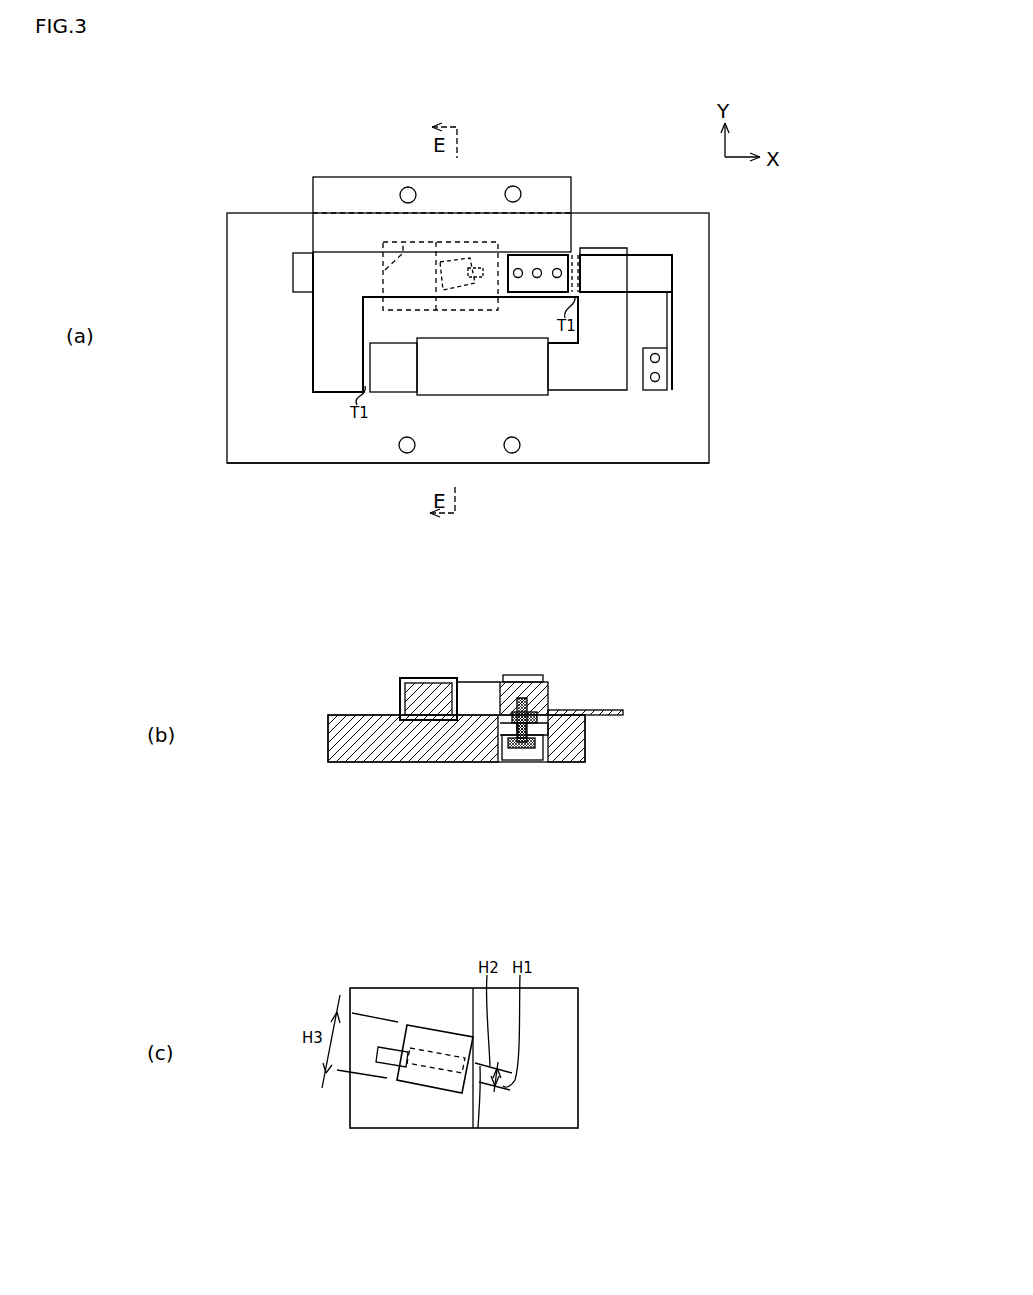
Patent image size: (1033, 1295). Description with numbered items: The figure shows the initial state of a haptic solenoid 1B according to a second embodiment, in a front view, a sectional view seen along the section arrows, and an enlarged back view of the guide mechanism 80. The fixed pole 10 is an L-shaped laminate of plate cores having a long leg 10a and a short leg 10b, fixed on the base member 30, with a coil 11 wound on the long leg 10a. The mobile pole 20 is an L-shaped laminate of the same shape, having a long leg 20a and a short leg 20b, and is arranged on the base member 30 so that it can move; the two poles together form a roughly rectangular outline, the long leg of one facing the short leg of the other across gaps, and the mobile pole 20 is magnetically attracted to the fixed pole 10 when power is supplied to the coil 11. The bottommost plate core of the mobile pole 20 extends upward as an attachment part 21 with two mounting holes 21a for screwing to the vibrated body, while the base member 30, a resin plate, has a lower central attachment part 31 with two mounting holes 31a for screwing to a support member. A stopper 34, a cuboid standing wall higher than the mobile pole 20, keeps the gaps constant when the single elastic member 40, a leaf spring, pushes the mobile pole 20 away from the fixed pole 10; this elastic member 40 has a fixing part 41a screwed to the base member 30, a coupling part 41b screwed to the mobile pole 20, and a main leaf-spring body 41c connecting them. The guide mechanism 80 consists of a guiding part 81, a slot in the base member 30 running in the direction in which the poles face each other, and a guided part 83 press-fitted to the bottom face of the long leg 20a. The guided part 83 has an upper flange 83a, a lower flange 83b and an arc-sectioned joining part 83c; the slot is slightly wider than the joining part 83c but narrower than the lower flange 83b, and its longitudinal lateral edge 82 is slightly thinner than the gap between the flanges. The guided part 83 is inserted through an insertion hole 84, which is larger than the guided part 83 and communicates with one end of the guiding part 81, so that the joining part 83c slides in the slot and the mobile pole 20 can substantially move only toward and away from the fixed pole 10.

The haptic solenoid 1B is at (616, 177).
The fixed pole 10 is at (597, 396).
The long leg 10a is at (387, 371).
The short leg 10b is at (602, 318).
The coil 11 is at (504, 380).
The mobile pole 20 is at (303, 313).
The long leg 20a is at (503, 253).
The short leg 20b is at (335, 366).
The attachment part 21 is at (428, 187).
The mounting holes 21a is at (404, 187).
The base member 30 is at (714, 440).
The attachment part 31 is at (463, 444).
The mounting holes 31a is at (405, 453).
The stopper 34 is at (302, 253).
The elastic member 40 is at (678, 280).
The fixing part 41a is at (667, 350).
The coupling part 41b is at (548, 258).
The main leaf-spring body 41c is at (673, 318).
The guide mechanism 80 is at (453, 250).
The guiding part 81 is at (479, 1128).
The longitudinal lateral edge 82 is at (538, 738).
The guided part 83 is at (519, 748).
The upper flange 83a is at (503, 720).
The lower flange 83b is at (526, 745).
The joining part 83c is at (513, 722).
The insertion hole 84 is at (403, 240).